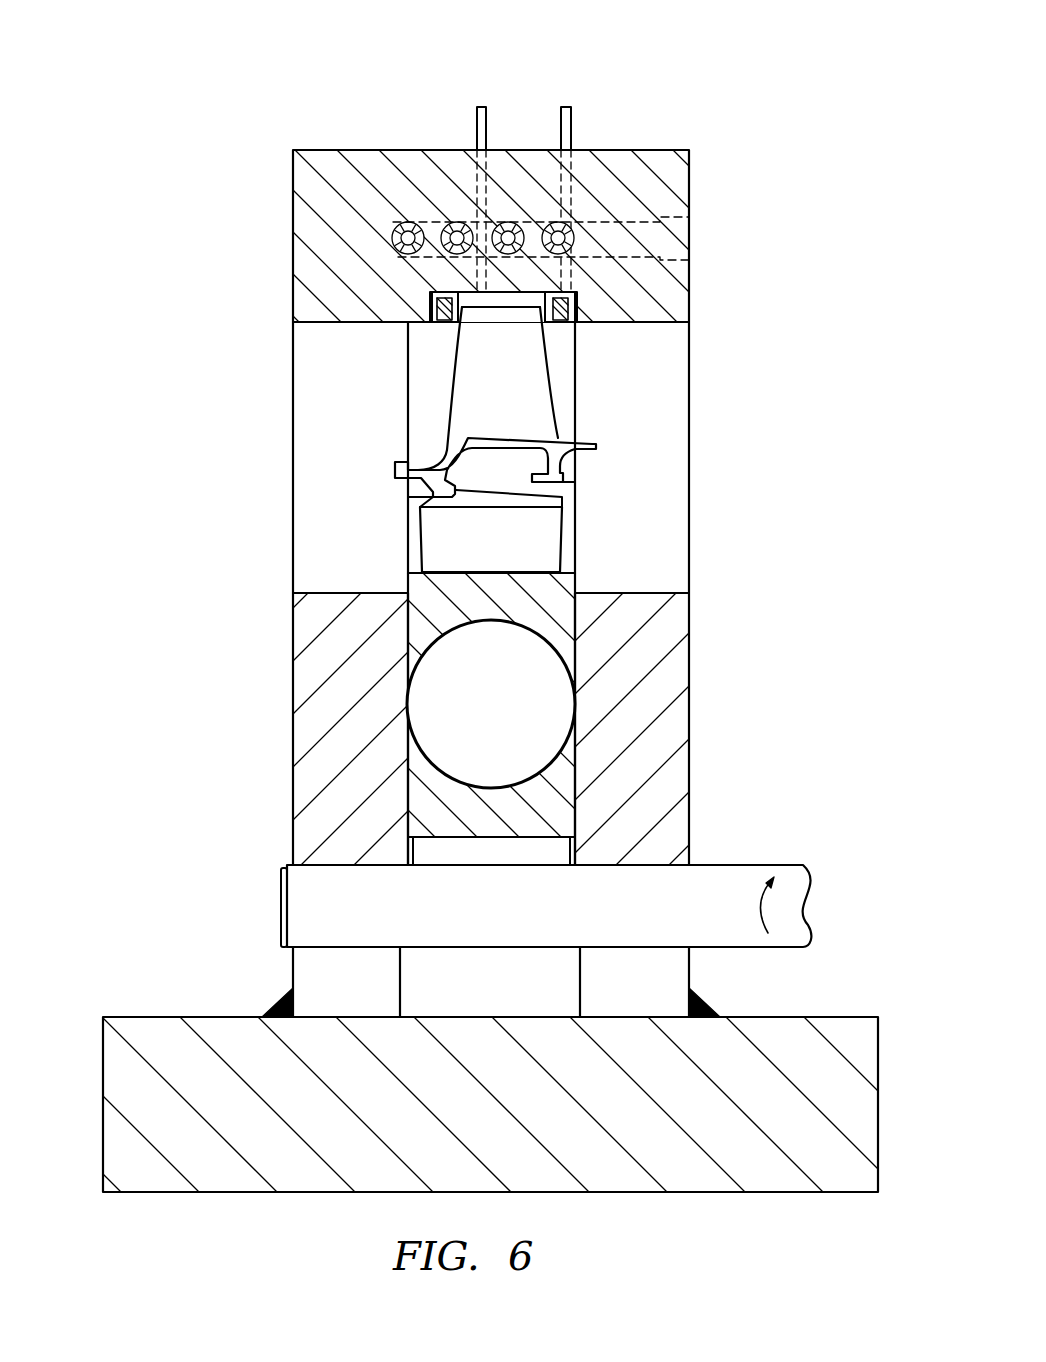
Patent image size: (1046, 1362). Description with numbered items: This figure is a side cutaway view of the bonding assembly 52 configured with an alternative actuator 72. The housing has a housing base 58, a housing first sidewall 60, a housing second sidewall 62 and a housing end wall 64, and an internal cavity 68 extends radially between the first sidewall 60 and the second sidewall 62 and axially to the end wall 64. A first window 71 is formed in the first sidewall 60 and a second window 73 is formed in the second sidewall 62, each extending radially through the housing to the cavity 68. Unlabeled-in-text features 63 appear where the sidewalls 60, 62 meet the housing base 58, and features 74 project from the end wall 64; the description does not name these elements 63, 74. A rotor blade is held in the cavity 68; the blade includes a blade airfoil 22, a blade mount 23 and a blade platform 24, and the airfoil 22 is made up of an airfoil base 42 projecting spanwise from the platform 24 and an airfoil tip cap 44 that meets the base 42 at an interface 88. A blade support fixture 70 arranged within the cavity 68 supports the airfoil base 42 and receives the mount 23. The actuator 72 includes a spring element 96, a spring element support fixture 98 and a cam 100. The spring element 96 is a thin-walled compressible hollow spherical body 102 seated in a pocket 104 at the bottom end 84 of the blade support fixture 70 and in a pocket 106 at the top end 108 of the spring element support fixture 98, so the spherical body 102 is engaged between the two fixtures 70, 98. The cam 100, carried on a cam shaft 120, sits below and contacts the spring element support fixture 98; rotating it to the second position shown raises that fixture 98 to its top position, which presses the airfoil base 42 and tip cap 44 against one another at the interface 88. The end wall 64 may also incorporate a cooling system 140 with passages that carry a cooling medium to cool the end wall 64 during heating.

The blade airfoil 22 is at (507, 388).
The blade mount 23 is at (572, 540).
The blade platform 24 is at (598, 448).
The airfoil base 42 is at (445, 417).
The airfoil tip cap 44 is at (449, 290).
The bonding assembly 52 is at (753, 103).
The housing base 58 is at (101, 1070).
The housing first sidewall 60 is at (387, 719).
The housing second sidewall 62 is at (680, 729).
The welds 63 is at (278, 1000).
The housing end wall 64 is at (668, 150).
The internal cavity 68 is at (570, 420).
The blade support fixture 70 is at (408, 545).
The first window 71 is at (310, 376).
The actuator 72 is at (585, 700).
The second window 73 is at (671, 352).
The pins 74 is at (565, 100).
The bottom end 84 is at (407, 672).
The interface 88 is at (489, 322).
The spring element 96 is at (395, 704).
The spring element support fixture 98 is at (395, 812).
The cam 100 is at (587, 845).
The compressible hollow spherical body 102 is at (577, 738).
The pocket 104 is at (541, 631).
The pocket 106 is at (426, 756).
The top end 108 is at (408, 740).
The cam shaft 120 is at (271, 912).
The cooling system 140 is at (700, 241).